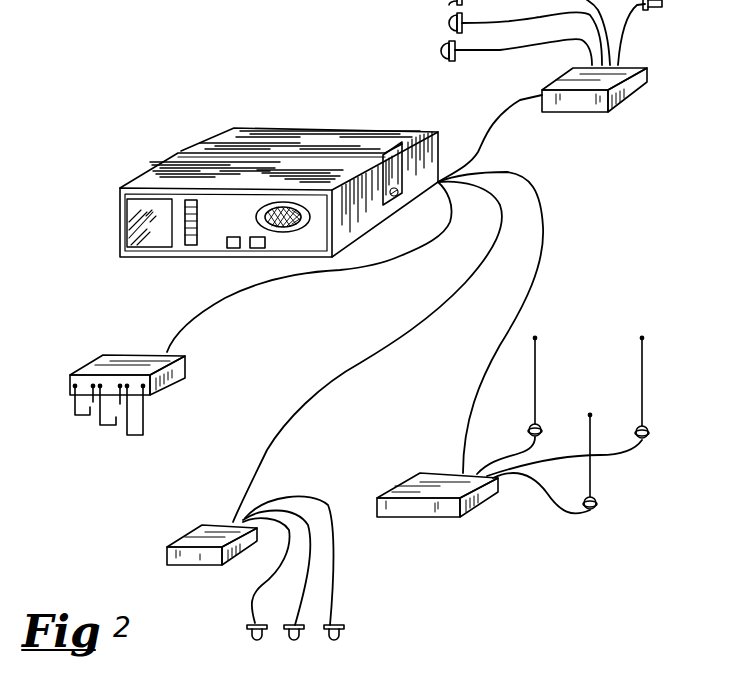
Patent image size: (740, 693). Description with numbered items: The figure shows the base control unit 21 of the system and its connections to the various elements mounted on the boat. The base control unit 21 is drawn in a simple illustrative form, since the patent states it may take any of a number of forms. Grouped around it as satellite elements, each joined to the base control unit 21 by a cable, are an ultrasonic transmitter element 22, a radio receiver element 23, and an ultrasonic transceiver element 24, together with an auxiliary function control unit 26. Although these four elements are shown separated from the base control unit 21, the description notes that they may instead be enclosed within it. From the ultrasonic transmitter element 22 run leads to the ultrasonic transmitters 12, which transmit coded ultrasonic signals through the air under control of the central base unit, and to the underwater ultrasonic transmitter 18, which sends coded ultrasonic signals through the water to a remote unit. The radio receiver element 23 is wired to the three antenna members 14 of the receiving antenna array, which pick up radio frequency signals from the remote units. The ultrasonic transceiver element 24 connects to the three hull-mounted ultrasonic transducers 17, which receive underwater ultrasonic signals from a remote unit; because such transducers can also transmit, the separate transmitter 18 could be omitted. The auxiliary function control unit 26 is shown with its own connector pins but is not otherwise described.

The ultrasonic transmitters 12 is at (443, 2).
The antenna members 14 is at (590, 415).
The ultrasonic transducers 17 is at (333, 641).
The ultrasonic transmitter 18 is at (667, 13).
The base control unit 21 is at (150, 180).
The ultrasonic transmitter element 22 is at (575, 113).
The radio receiver element 23 is at (444, 516).
The ultrasonic transceiver element 24 is at (190, 537).
The auxiliary function control unit 26 is at (122, 356).